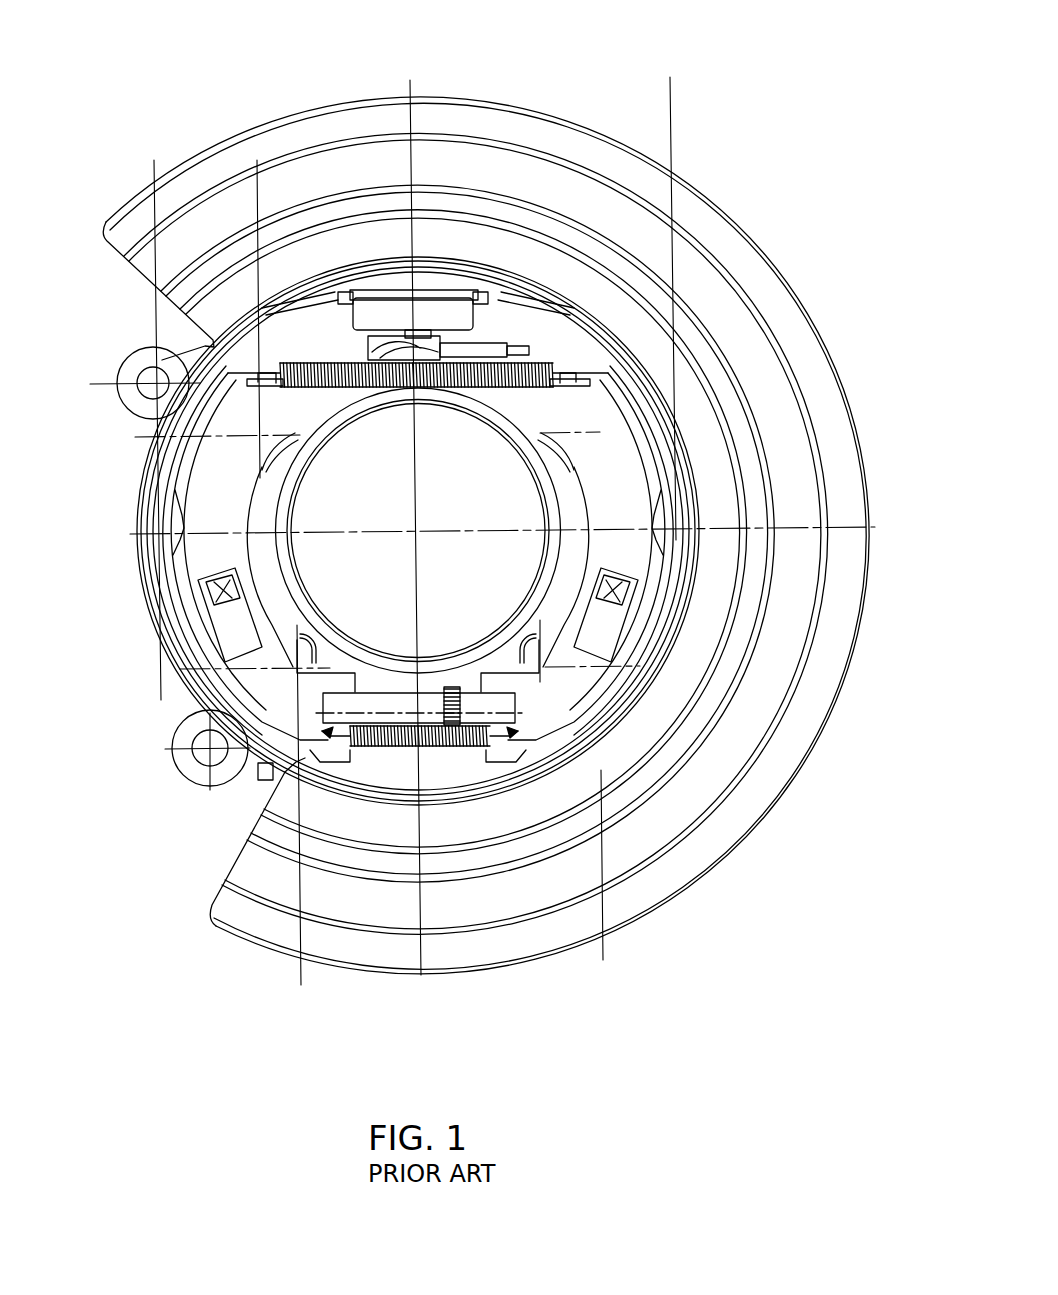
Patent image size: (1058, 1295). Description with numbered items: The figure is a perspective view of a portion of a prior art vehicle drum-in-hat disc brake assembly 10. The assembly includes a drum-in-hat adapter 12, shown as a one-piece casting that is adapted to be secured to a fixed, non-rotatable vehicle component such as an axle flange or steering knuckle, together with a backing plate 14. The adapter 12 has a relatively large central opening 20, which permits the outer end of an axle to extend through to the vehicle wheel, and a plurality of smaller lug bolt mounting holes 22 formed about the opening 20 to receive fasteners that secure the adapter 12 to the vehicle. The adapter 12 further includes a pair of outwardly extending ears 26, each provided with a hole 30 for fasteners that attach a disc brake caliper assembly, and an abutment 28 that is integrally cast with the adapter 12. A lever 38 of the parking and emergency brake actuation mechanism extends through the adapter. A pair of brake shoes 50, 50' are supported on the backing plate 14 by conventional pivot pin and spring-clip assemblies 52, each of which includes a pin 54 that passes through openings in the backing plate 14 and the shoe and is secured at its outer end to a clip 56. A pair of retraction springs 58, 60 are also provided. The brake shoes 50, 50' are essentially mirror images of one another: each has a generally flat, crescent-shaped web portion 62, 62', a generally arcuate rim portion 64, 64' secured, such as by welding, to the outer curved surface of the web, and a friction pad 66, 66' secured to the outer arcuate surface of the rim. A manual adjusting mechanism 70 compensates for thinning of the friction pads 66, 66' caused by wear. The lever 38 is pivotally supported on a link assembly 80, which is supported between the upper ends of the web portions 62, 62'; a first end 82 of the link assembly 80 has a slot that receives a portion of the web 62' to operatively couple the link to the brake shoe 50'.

The drum-in-hat disc brake assembly 10 is at (800, 248).
The drum-in-hat adapter 12 is at (250, 782).
The backing plate 14 is at (736, 836).
The opening 20 is at (303, 484).
The lug bolt mounting holes 22 is at (306, 668).
The ears 26 is at (130, 358).
The abutment 28 is at (434, 314).
The hole 30 is at (152, 386).
The lever 38 is at (368, 352).
The brake shoe 50 is at (212, 516).
The brake shoe 50' is at (690, 516).
The pivot pin and spring-clip assemblies 52 is at (232, 632).
The pin 54 is at (242, 588).
The clips 56 is at (244, 617).
The retraction spring 58 is at (433, 395).
The retraction spring 60 is at (444, 747).
The web portion 62 is at (233, 567).
The web portion 62' is at (603, 567).
The rim portion 64 is at (241, 545).
The rim portion 64' is at (586, 545).
The friction pad 66 is at (170, 550).
The friction pad 66' is at (746, 550).
The manual adjusting mechanism 70 is at (296, 762).
The link assembly 80 is at (493, 353).
The first end 82 is at (557, 370).